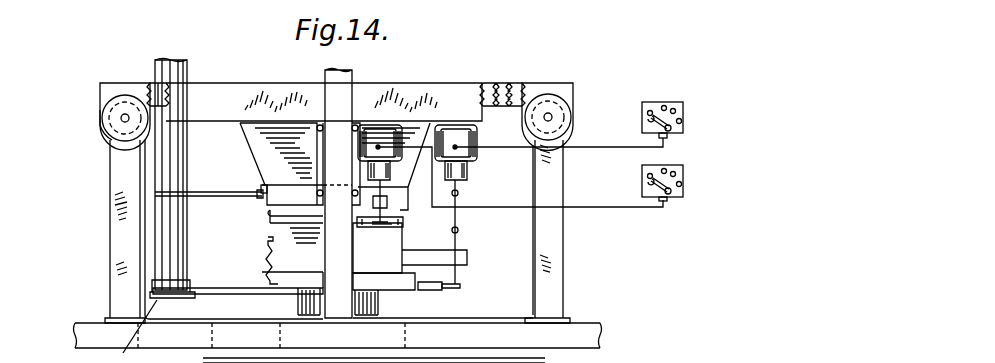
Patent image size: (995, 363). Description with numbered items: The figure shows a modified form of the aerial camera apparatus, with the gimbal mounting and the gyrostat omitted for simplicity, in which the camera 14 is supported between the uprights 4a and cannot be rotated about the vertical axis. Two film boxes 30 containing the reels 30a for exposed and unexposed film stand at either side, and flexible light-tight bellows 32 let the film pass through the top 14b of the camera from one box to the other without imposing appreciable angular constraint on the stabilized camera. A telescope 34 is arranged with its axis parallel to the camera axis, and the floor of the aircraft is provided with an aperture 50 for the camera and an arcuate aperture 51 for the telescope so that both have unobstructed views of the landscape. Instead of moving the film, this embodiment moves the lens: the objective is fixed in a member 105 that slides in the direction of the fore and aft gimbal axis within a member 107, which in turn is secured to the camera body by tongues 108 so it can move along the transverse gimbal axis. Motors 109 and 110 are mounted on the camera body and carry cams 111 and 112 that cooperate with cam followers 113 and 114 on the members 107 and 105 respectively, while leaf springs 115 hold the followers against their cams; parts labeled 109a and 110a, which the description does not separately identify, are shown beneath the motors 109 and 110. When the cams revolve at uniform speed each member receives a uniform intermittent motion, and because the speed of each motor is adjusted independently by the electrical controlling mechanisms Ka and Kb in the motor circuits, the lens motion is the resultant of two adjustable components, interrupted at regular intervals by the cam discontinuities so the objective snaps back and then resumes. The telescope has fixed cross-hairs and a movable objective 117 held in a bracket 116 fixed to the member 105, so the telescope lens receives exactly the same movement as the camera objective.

The camera 14 is at (262, 147).
The top of the camera 14b is at (268, 80).
The uprights 4a is at (352, 75).
The film boxes 30 is at (110, 100).
The reels 30a is at (103, 128).
The flexible light-tight bellows 32 is at (154, 84).
The telescope 34 is at (188, 172).
The aperture 50 is at (282, 333).
The aperture 51 is at (212, 333).
The member 105 is at (393, 282).
The member 107 is at (410, 248).
The tongues 108 is at (268, 213).
The motor 109 is at (378, 125).
The solenoid plunger 109a is at (385, 178).
The motor 110 is at (470, 160).
The solenoid plunger rod 110a is at (457, 183).
The cam 111 is at (388, 227).
The cam 112 is at (462, 288).
The cam follower 113 is at (373, 226).
The cam follower 114 is at (442, 291).
The leaf springs 115 is at (262, 262).
The bracket 116 is at (238, 253).
The objective or lens of the telescope 117 is at (132, 331).
The electrical controlling mechanism Ka is at (662, 108).
The electrical controlling mechanism Kb is at (667, 197).